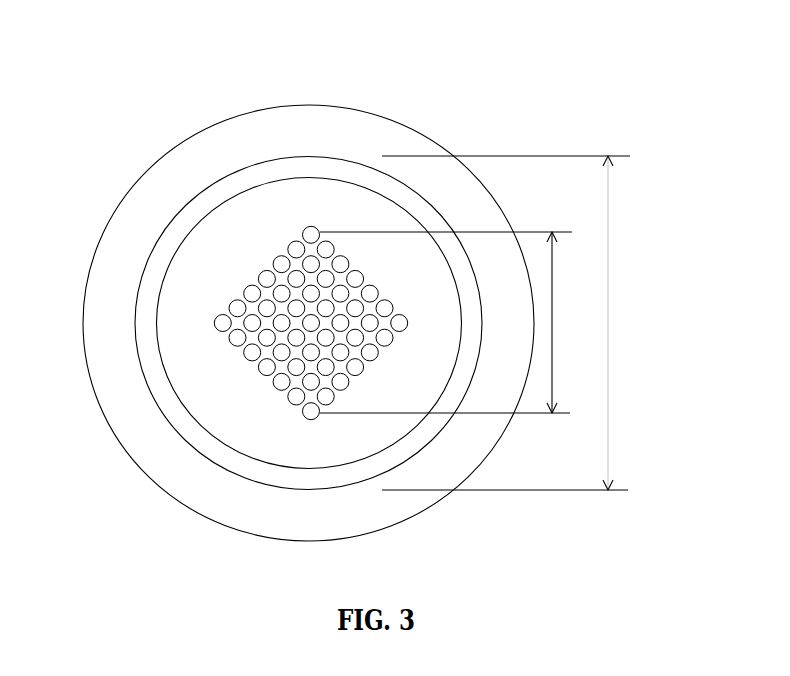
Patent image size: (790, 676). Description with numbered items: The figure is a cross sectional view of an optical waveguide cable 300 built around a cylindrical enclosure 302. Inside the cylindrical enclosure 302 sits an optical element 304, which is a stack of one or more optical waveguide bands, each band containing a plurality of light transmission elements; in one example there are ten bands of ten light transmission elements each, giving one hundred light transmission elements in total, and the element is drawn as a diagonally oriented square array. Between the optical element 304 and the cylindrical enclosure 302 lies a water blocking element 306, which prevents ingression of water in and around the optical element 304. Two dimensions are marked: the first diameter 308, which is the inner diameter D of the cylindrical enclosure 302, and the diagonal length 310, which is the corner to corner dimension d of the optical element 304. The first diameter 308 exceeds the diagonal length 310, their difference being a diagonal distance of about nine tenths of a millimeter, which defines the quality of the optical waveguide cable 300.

The optical waveguide cable 300 is at (379, 285).
The cylindrical enclosure 302 is at (288, 133).
The optical element 304 is at (284, 266).
The water blocking element 306 is at (242, 460).
The first diameter 308 is at (607, 210).
The diagonal length 310 is at (552, 347).